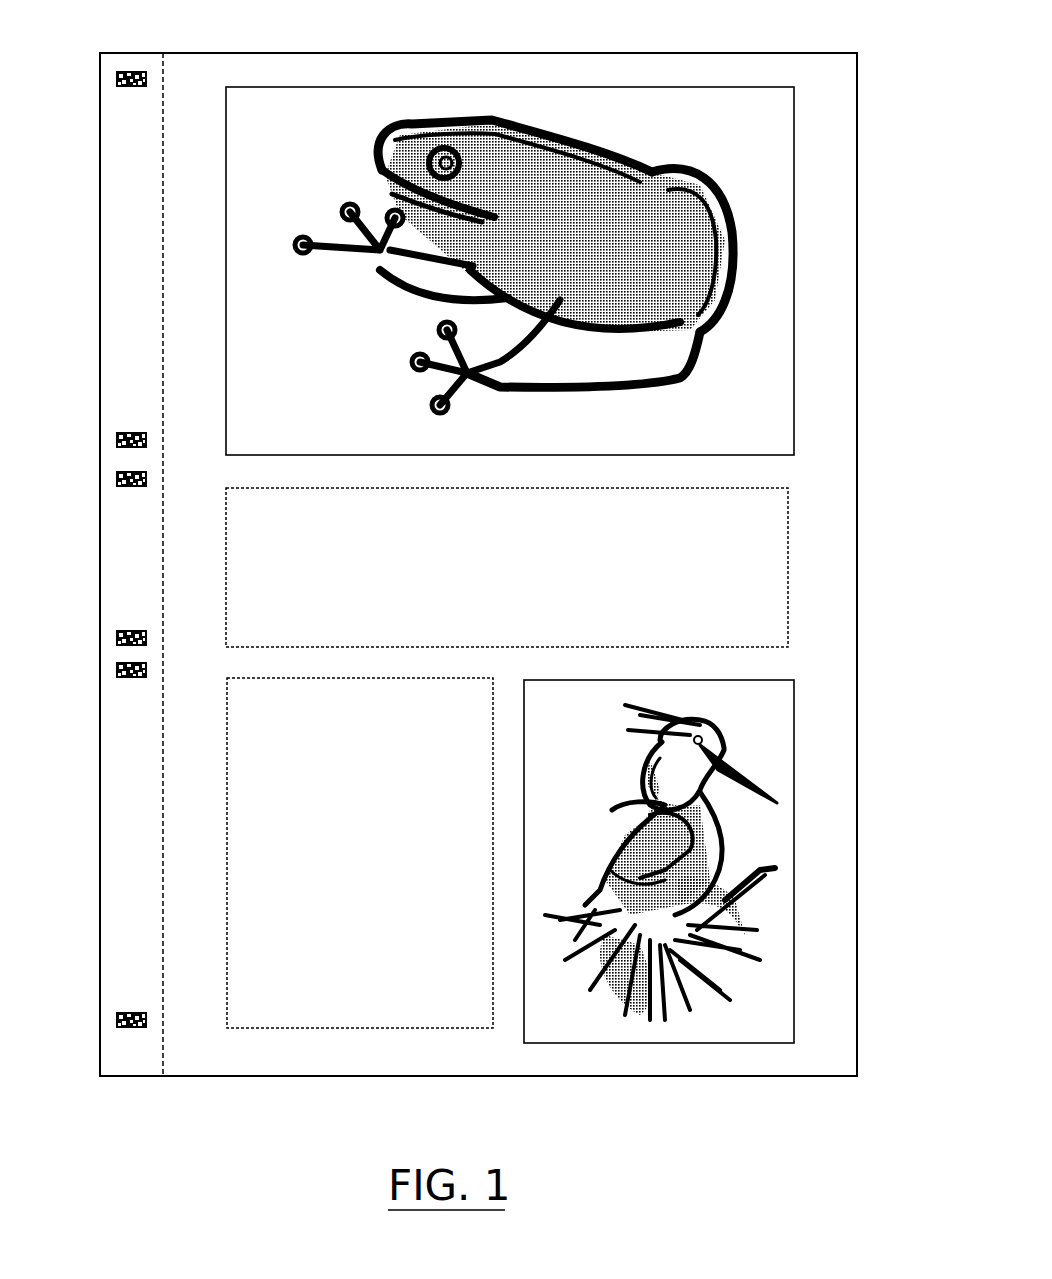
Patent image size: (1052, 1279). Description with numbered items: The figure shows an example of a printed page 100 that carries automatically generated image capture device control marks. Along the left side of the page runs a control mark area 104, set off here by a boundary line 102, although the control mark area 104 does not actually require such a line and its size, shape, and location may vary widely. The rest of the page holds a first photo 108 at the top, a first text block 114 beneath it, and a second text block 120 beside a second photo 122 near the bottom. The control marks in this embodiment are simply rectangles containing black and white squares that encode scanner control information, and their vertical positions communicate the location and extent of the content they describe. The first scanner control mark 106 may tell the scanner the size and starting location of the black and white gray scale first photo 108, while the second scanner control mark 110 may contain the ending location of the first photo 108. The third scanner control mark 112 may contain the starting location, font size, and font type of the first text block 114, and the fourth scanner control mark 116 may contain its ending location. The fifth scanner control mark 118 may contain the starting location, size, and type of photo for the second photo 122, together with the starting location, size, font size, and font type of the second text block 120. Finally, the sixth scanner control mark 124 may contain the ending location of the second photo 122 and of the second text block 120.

The printed page 100 is at (857, 53).
The boundary line 102 is at (163, 53).
The control mark area 104 is at (131, 564).
The first scanner control mark 106 is at (116, 71).
The first photo 108 is at (445, 87).
The second scanner control mark 110 is at (116, 432).
The third scanner control mark 112 is at (116, 471).
The first text block 114 is at (788, 488).
The fourth scanner control mark 116 is at (116, 630).
The fifth scanner control mark 118 is at (116, 662).
The second text block 120 is at (227, 678).
The second photo 122 is at (794, 680).
The sixth scanner control mark 124 is at (116, 1012).